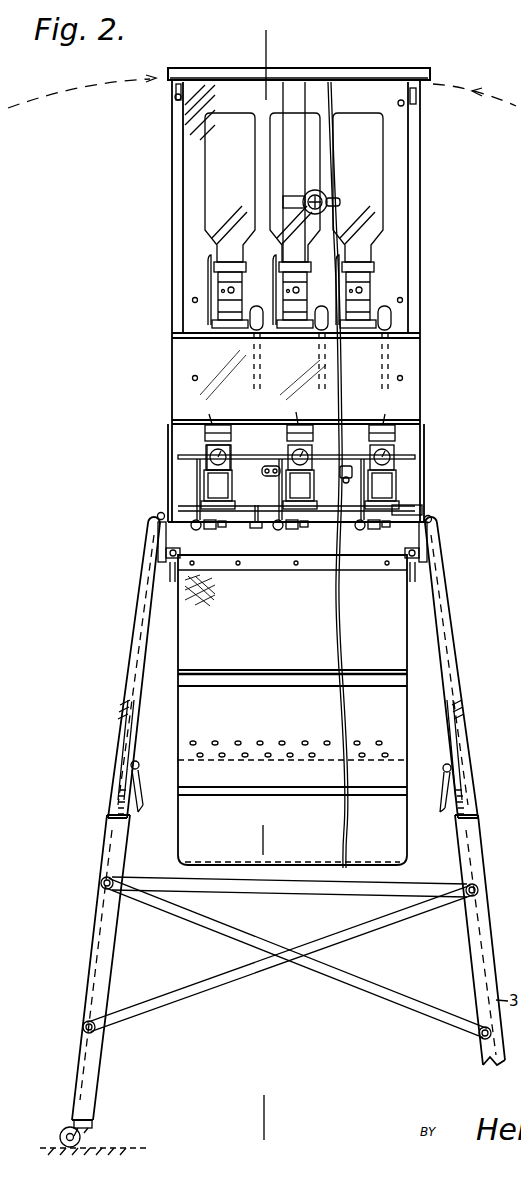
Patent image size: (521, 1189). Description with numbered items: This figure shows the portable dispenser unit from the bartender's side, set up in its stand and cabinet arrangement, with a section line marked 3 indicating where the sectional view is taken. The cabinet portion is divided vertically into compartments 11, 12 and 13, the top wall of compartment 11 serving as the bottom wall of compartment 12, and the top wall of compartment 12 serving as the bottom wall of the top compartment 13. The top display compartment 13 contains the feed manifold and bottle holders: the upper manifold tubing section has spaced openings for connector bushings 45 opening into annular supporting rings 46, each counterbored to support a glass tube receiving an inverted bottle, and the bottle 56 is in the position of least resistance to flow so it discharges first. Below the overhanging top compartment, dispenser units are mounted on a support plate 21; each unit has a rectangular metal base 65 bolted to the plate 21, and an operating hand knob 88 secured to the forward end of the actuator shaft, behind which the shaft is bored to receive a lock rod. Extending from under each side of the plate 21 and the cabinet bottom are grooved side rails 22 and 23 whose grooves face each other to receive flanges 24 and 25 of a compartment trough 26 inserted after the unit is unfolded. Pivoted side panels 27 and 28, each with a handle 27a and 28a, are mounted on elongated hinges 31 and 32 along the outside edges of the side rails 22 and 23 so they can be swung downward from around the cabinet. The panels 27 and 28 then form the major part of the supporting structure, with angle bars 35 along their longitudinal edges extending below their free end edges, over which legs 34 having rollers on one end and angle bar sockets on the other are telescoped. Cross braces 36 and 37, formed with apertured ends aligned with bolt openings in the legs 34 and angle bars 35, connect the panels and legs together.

The section line 3- 3 is at (275, 1130).
The bottle 56 is at (345, 172).
The top compartment 13 is at (398, 258).
The connector bushing 45 is at (370, 318).
The annular supporting ring 46 is at (370, 333).
The compartment 12 is at (400, 393).
The compartment 11 is at (410, 443).
The operating hand knob 88 is at (234, 451).
The base 65 is at (256, 524).
The support plate 21 is at (400, 514).
The elongated hinge 31 is at (157, 515).
The elongated hinge 32 is at (431, 520).
The grooved side rail 22 is at (158, 555).
The flange 24 is at (178, 557).
The grooved side rail 23 is at (427, 561).
The flange 25 is at (406, 556).
The compartment trough 26 is at (410, 634).
The angle bar 35 is at (120, 668).
The pivoted side panel 27 is at (125, 737).
The handle 27a is at (140, 812).
The pivoted side panel 28 is at (462, 714).
The handle 28a is at (442, 812).
The cross brace 36 is at (193, 992).
The cross brace 37 is at (368, 988).
The leg 34 is at (92, 1056).